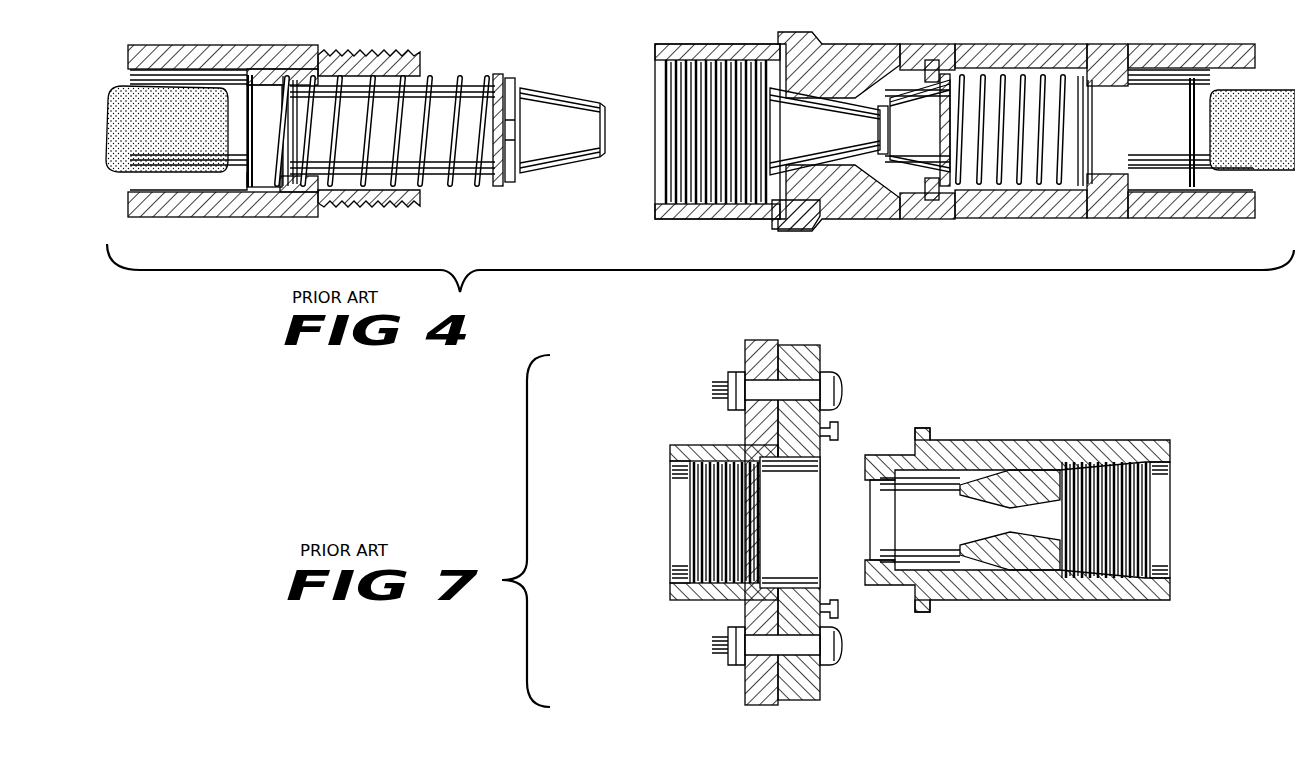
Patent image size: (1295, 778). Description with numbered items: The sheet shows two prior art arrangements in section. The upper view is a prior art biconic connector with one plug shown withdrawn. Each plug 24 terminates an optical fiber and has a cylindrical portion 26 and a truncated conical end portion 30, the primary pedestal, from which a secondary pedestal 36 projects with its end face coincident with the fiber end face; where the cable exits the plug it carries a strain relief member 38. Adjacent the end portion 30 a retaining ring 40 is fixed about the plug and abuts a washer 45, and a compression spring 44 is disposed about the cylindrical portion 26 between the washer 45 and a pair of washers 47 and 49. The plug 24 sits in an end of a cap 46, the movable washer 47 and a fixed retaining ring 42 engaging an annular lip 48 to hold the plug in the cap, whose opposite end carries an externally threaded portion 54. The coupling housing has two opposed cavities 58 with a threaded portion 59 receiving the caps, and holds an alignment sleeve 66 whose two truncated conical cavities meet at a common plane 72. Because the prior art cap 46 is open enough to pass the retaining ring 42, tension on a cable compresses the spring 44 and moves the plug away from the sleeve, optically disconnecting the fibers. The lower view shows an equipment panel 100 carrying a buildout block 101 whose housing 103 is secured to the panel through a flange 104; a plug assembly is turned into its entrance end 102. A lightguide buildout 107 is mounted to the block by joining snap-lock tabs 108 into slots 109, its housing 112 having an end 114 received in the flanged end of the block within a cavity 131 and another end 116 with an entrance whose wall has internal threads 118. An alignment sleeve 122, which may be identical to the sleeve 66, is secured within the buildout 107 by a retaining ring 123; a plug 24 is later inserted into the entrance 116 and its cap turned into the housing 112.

In FIG. 4, the plug 24 is at (568, 168).
In FIG. 4, the cylindrical portion 26 is at (276, 125).
In FIG. 4, the end portion 30 is at (565, 102).
In FIG. 4, the secondary pedestal 36 is at (848, 121).
In FIG. 4, the strain relief member 38 is at (143, 90).
In FIG. 4, the retaining ring 40 is at (514, 90).
In FIG. 4, the retaining ring 42 is at (249, 135).
In FIG. 4, the compression spring 44 is at (435, 170).
In FIG. 4, the washer 45 is at (498, 76).
In FIG. 4, the cap 46 is at (195, 48).
In FIG. 4, the washer 47 is at (292, 138).
In FIG. 4, the annular lip 48 is at (265, 70).
In FIG. 4, the washer 49 is at (288, 112).
In FIG. 4, the externally threaded portion 54 is at (355, 56).
In FIG. 4, the cavity 58 is at (773, 212).
In FIG. 4, the threaded portion 59 is at (660, 180).
In FIG. 4, the alignment sleeve 66 is at (848, 60).
In FIG. 4, the common plane 72 is at (848, 138).
In FIG. 7, the equipment panel 100 is at (772, 352).
In FIG. 7, the buildout block 101 is at (680, 597).
In FIG. 7, the entrance end 102 is at (672, 515).
In FIG. 7, the housing 103 is at (686, 445).
In FIG. 7, the flange 104 is at (810, 372).
In FIG. 7, the lightguide buildout 107 is at (1002, 414).
In FIG. 7, the snap-lock tabs 108 is at (930, 430).
In FIG. 7, the slots 109 is at (840, 430).
In FIG. 7, the housing 112 is at (1095, 442).
In FIG. 7, the end 114 is at (880, 518).
In FIG. 7, the end 116 is at (1160, 514).
In FIG. 7, the internal threads 118 is at (1088, 578).
In FIG. 7, the alignment sleeve 122 is at (1030, 478).
In FIG. 7, the retaining ring 123 is at (876, 560).
In FIG. 7, the cavity 131 is at (800, 548).